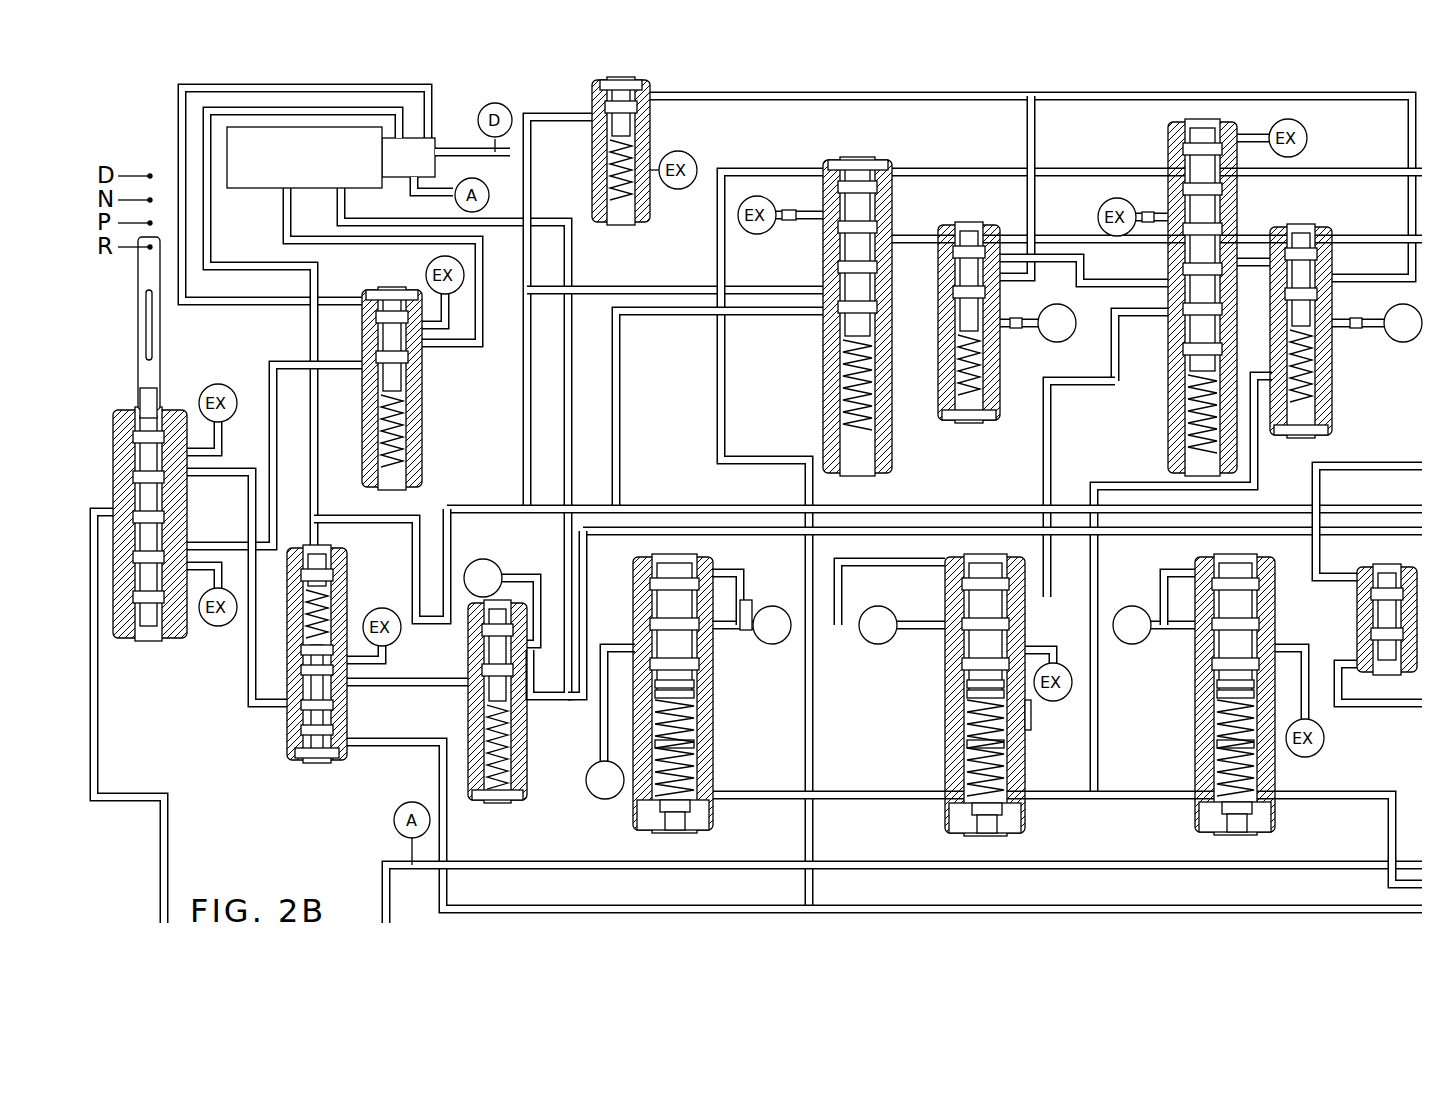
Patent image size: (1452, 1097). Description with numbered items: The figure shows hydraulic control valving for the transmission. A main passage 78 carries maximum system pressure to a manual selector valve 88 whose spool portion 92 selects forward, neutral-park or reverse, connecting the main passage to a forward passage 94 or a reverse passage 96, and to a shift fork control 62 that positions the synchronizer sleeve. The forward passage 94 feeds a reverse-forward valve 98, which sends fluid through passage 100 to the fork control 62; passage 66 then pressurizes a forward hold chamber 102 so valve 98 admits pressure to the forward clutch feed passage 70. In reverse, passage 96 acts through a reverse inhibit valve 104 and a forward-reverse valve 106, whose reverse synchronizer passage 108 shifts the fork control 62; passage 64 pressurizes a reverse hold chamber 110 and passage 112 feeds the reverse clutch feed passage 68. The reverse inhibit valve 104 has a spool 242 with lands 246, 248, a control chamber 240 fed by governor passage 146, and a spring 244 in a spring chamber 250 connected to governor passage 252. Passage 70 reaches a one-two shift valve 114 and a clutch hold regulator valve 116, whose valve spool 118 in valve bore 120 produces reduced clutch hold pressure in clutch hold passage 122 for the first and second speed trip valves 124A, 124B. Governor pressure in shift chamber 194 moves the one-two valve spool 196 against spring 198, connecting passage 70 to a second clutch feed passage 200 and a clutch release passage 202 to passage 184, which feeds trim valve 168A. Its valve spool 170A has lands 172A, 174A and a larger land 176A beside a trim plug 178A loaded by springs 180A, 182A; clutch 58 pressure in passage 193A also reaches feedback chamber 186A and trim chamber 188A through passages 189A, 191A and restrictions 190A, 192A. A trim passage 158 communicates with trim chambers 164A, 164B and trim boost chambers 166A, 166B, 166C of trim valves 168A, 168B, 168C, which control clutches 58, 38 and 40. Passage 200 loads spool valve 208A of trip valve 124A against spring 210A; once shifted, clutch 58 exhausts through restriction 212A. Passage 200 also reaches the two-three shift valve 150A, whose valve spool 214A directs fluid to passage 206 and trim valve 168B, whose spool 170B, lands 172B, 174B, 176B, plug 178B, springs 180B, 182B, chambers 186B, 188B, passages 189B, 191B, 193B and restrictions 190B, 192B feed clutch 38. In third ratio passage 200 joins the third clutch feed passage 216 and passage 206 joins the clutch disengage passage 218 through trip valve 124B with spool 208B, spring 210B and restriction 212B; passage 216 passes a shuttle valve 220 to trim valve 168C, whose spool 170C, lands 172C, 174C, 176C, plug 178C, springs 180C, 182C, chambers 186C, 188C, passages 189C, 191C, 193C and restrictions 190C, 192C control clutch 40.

The shift fork control mechanism 62 is at (442, 130).
The passage 64 is at (252, 268).
The passage 66 is at (228, 300).
The forward clutch feed passage 70 is at (640, 290).
The main passage 78 is at (385, 887).
The manual selector valve 88 is at (112, 428).
The manually controlled spool portion 92 is at (152, 385).
The forward passage 94 is at (275, 518).
The reverse passage 96 is at (250, 698).
The reverse-forward valve 98 is at (424, 434).
The passage 100 is at (448, 350).
The forward hold chamber 102 is at (400, 288).
The reverse inhibit valve 104 is at (350, 710).
The forward-reverse valve 106 is at (500, 802).
The reverse synchronizer passage 108 is at (568, 445).
The reverse hold chamber 110 is at (515, 580).
The passage 112 is at (418, 680).
The 1-2 shift valve 114 is at (821, 360).
The clutch hold regulator valve 116 is at (621, 227).
The valve spool 118 is at (600, 125).
The valve bore 120 is at (600, 85).
The clutch hold passage 122 is at (668, 102).
The first speed trip valve 124A is at (938, 405).
The second speed trip valve 124B is at (1334, 400).
The governor passage 146 is at (788, 168).
The 2-3 shift valve 150A is at (1165, 382).
The trim passage 158 is at (815, 800).
The trim chamber 164A is at (1001, 403).
The trim chamber 164B is at (1310, 428).
The trim boost chamber 166A is at (695, 772).
The trim boost chamber 166B is at (1005, 772).
The trim boost chamber 166C is at (1258, 762).
The trim valve 168A is at (628, 812).
The trim valve 168B is at (940, 812).
The trim valve 168C is at (1282, 812).
The valve spool 170A is at (672, 573).
The valve spool 170B is at (986, 573).
The valve spool 170C is at (1264, 583).
The land 172A is at (680, 570).
The land 172B is at (965, 560).
The land 172C is at (1243, 580).
The land 174A is at (705, 650).
The land 174B is at (1010, 650).
The land 174C is at (1240, 650).
The land 176A is at (625, 655).
The land 176B is at (1030, 700).
The land 176C is at (1290, 680).
The trim plug 178A is at (630, 680).
The trim plug 178B is at (1059, 735).
The trim plug 178C is at (1200, 742).
The spring 180A is at (700, 830).
The spring 180B is at (975, 835).
The spring 180C is at (1225, 830).
The spring 182A is at (665, 832).
The spring 182B is at (990, 835).
The spring 182C is at (1245, 832).
The passage 184 is at (618, 380).
The feedback chamber 186A is at (688, 575).
The feedback chamber 186B is at (975, 575).
The feedback chamber 186C is at (1232, 575).
The trim chamber 188A is at (700, 744).
The trim chamber 188B is at (960, 745).
The trim chamber 188C is at (1192, 720).
The passage 189A is at (745, 600).
The passage 189B is at (905, 575).
The passage 189C is at (1160, 600).
The restriction 190A is at (728, 575).
The restriction 190B is at (935, 572).
The restriction 190C is at (1182, 575).
The passage 191A is at (722, 684).
The passage 191B is at (929, 703).
The passage 191C is at (1180, 662).
The restriction 192A is at (725, 700).
The restriction 192B is at (933, 720).
The restriction 192C is at (1188, 690).
The passage 193A is at (715, 652).
The passage 193B is at (945, 660).
The passage 193C is at (1180, 645).
The shift chamber 194 is at (868, 162).
The 1-2 valve spool 196 is at (840, 300).
The spring 198 is at (838, 380).
The second clutch feed passage 200 is at (912, 240).
The clutch release passage 202 is at (930, 305).
The passage 206 is at (1050, 420).
The spool valve 208A is at (1000, 290).
The spool valve 208B is at (1315, 298).
The spring 210A is at (1050, 390).
The spring 210B is at (1340, 370).
The restriction 212A is at (1022, 330).
The restriction 212B is at (1352, 330).
The valve spool 214A is at (1220, 230).
The third clutch feed passage 216 is at (1355, 240).
The clutch disengage passage 218 is at (1302, 262).
The shuttle valve 220 is at (1398, 562).
The control chamber 240 is at (300, 758).
The spool 242 is at (302, 705).
The spring 244 is at (325, 640).
The land 246 is at (302, 730).
The land 248 is at (302, 670).
The spring chamber 250 is at (300, 645).
The governor passage 252 is at (452, 540).
The second ratio clutch 38 is at (893, 642).
The third clutch 40 is at (1112, 610).
The clutch 58 is at (752, 632).
The reverse clutch feed passage 68 is at (1406, 708).